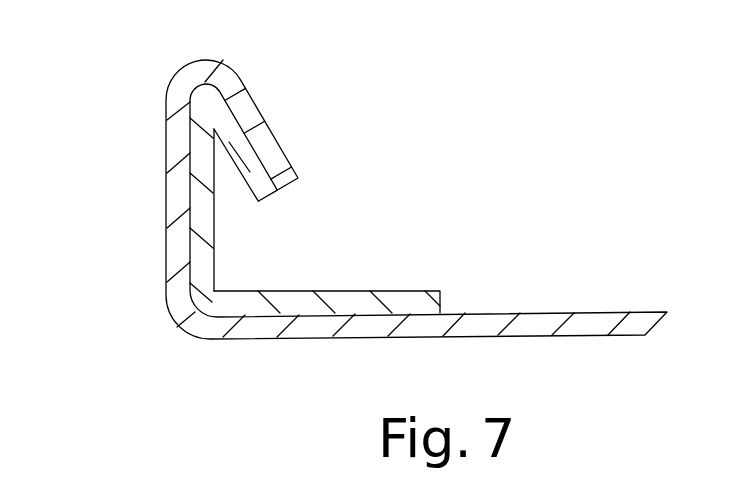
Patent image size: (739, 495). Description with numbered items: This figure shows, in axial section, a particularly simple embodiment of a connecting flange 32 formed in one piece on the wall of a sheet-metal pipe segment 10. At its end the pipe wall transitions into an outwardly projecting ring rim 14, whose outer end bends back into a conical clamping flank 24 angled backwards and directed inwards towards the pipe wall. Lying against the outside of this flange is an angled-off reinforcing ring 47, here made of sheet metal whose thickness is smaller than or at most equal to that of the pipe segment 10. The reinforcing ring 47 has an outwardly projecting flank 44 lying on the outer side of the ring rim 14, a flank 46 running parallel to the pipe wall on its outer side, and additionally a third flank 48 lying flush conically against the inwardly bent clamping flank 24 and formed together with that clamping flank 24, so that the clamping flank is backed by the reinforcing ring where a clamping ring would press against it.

The pipe segment 10 is at (545, 312).
The ring rim 14 is at (178, 122).
The clamping flank 24 is at (243, 108).
The connecting flange 32 is at (164, 246).
The outwardly projecting flank 44 is at (200, 198).
The flank running parallel to the pipe wall 46 is at (283, 303).
The reinforcing ring 47 is at (216, 235).
The third flank 48 is at (237, 142).